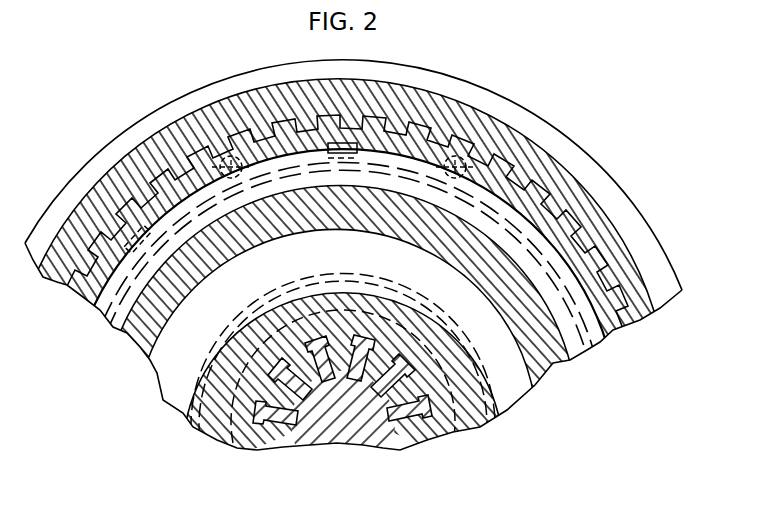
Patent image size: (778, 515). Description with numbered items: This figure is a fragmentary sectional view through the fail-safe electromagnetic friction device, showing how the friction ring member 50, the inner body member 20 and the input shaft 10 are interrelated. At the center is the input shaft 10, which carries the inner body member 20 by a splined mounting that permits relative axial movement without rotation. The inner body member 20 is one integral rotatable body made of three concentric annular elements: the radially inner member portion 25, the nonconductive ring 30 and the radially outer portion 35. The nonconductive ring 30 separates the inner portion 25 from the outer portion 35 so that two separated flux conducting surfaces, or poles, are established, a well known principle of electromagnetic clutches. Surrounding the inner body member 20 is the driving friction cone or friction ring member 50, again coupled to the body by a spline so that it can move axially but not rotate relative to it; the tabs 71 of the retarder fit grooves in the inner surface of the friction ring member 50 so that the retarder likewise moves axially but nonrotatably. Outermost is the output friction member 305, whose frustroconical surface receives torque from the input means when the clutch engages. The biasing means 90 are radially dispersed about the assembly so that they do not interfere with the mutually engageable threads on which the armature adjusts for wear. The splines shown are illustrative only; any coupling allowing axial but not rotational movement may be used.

The output friction member 305 is at (466, 93).
The friction ring member 50 is at (510, 131).
The biasing means 90 is at (515, 158).
The tabs 71 is at (575, 205).
The inner body member 20 is at (580, 259).
The radially outer portion 35 is at (583, 345).
The nonconductive ring 30 is at (557, 363).
The radially inner member portion 25 is at (492, 412).
The input shaft 10 is at (360, 432).